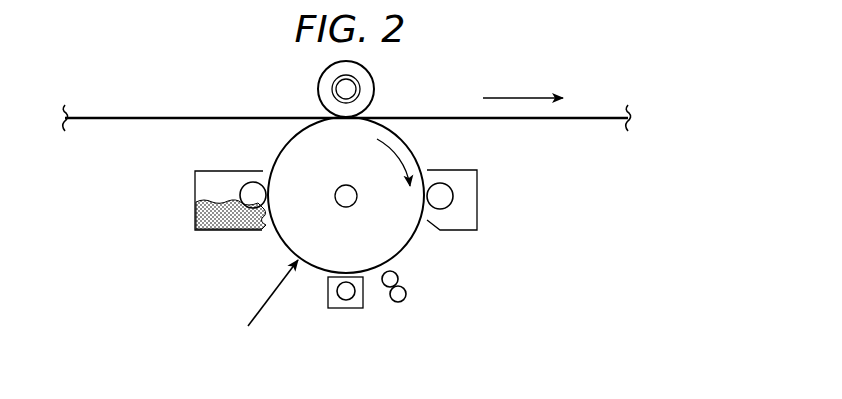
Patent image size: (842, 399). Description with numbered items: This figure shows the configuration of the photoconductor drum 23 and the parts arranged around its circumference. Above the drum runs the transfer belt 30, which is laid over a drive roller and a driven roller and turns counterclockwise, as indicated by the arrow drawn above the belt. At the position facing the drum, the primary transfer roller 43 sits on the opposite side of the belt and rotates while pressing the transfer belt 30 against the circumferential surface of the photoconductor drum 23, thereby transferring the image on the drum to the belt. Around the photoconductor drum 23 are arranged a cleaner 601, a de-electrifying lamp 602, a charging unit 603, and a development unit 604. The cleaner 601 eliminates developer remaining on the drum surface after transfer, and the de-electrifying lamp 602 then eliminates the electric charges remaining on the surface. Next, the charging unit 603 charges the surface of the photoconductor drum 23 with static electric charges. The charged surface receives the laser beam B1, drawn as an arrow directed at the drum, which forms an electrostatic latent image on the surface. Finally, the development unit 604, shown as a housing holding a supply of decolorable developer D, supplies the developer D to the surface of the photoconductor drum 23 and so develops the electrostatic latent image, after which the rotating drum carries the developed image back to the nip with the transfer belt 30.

The transfer belt 30 is at (197, 117).
The primary transfer roller 43 is at (374, 88).
The photoconductor drum 23 is at (412, 245).
The development unit 604 is at (195, 181).
The decolorable developer D is at (201, 216).
The cleaner 601 is at (478, 196).
The de-electrifying lamp 602 is at (405, 300).
The charging unit 603 is at (345, 309).
The laser beam B1 is at (262, 301).